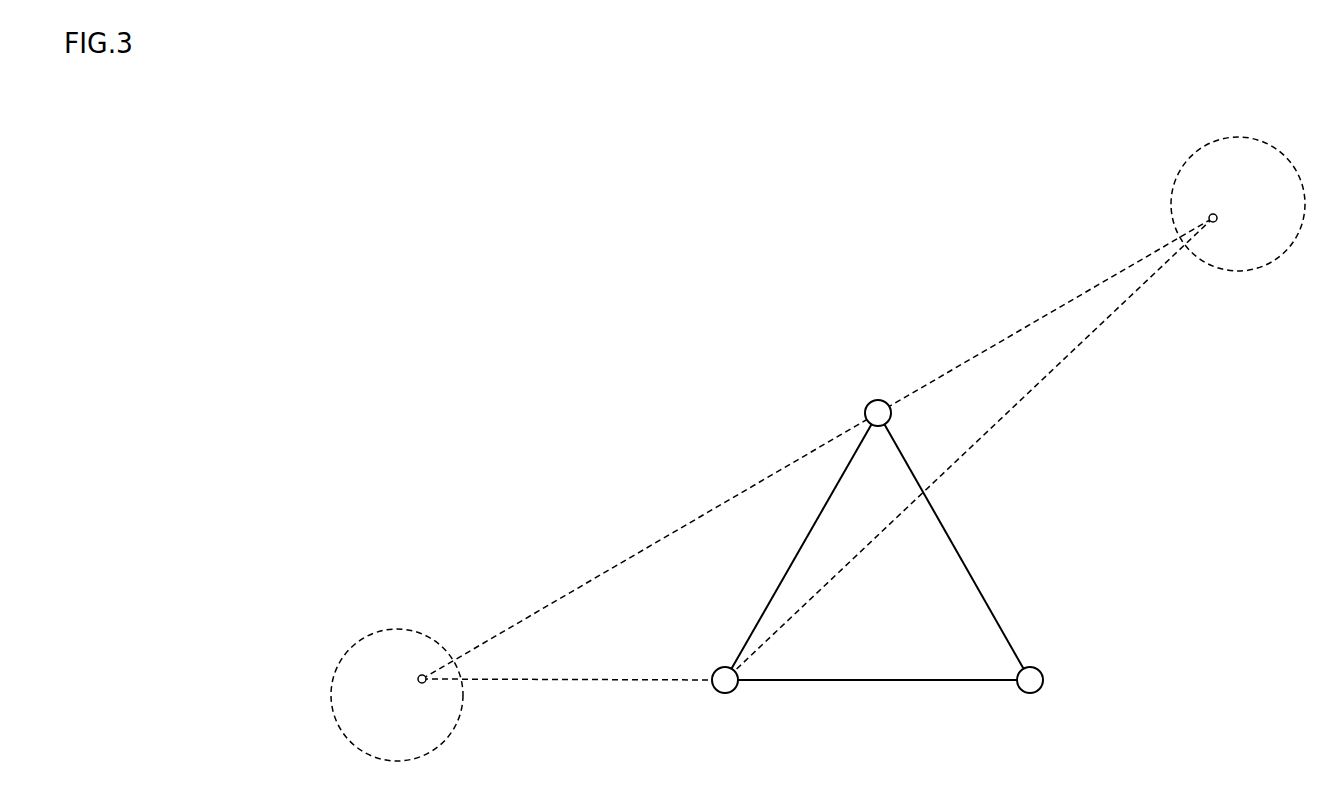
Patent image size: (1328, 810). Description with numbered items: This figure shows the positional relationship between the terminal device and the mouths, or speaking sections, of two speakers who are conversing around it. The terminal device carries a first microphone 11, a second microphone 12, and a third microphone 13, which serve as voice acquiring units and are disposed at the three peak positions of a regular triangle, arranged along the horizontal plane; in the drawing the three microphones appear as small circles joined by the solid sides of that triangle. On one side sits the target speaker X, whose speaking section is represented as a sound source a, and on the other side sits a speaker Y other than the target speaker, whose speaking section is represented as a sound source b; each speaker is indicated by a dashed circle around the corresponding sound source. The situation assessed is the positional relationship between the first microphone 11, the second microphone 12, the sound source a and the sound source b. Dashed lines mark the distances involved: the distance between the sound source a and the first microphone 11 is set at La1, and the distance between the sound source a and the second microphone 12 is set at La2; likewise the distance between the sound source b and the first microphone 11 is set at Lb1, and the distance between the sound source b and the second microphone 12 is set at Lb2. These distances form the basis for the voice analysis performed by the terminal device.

The first microphone 11 is at (879, 400).
The second microphone 12 is at (724, 693).
The third microphone 13 is at (1030, 693).
The target speaker X is at (397, 628).
The speaker other than the target speaker Y is at (1238, 272).
The sound source a is at (424, 674).
The sound source b is at (1209, 216).
The distance between the sound source a and the first microphone La1 is at (650, 546).
The distance between the sound source a and the second microphone La2 is at (573, 694).
The distance between the sound source b and the first microphone Lb1 is at (1045, 315).
The distance between the sound source b and the second microphone Lb2 is at (969, 449).